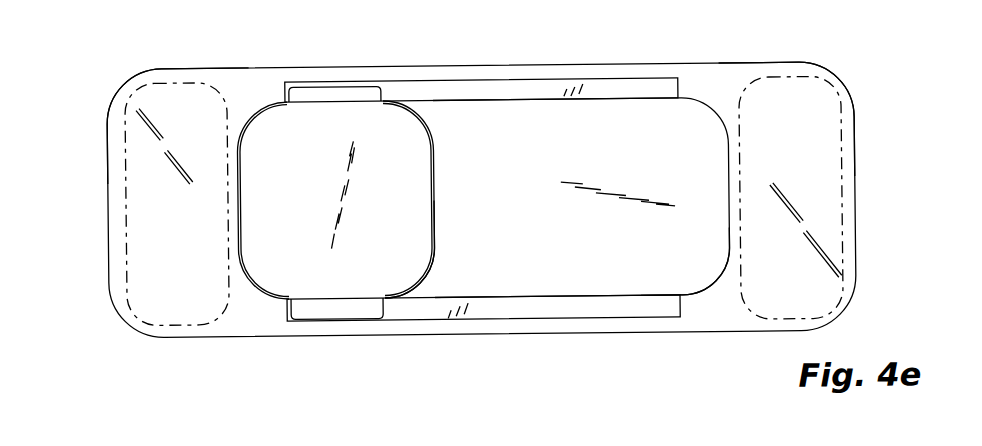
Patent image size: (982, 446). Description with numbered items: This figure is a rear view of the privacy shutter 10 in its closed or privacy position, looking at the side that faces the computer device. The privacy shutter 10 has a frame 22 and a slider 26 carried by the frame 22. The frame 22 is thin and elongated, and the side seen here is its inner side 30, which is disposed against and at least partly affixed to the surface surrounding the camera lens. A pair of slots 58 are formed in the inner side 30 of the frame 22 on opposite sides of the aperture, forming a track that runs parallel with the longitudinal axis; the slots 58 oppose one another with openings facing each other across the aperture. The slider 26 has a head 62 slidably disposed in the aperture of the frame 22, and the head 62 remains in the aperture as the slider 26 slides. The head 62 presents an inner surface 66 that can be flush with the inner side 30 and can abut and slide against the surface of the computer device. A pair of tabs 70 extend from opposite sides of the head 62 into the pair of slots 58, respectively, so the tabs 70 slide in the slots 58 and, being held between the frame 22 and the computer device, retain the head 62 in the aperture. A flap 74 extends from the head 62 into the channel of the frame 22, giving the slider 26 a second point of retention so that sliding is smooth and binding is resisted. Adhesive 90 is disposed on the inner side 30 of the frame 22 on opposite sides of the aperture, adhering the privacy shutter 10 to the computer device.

The privacy shutter 10 is at (95, 145).
The frame 22 is at (247, 80).
The slider 26 is at (615, 144).
The inner side 30 is at (718, 86).
The slots 58 is at (508, 97).
The head 62 is at (277, 254).
The inner surface 66 is at (400, 247).
The tabs 70 is at (337, 92).
The flap 74 is at (690, 247).
The adhesive 90 is at (128, 266).